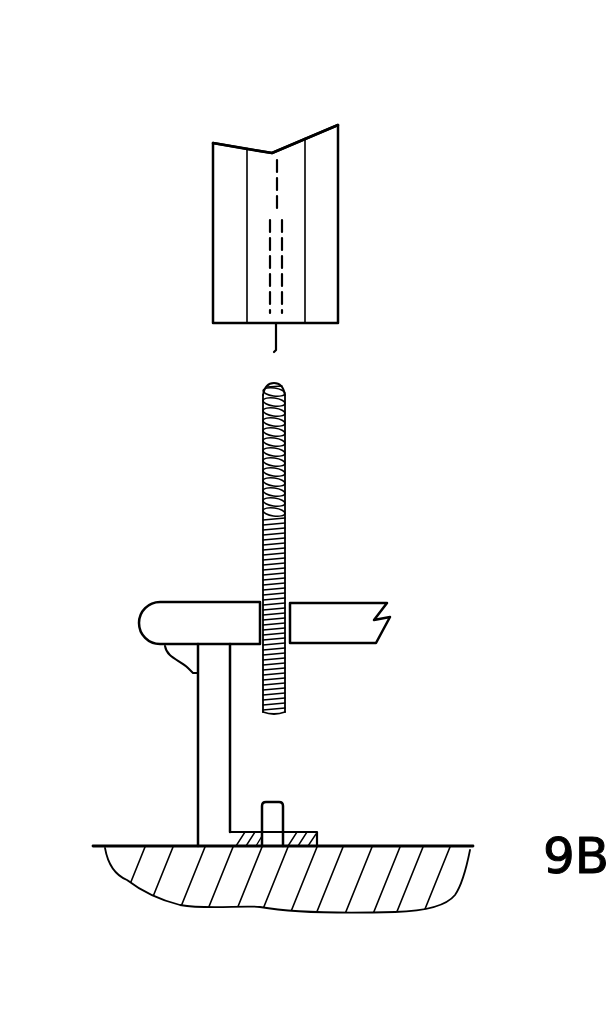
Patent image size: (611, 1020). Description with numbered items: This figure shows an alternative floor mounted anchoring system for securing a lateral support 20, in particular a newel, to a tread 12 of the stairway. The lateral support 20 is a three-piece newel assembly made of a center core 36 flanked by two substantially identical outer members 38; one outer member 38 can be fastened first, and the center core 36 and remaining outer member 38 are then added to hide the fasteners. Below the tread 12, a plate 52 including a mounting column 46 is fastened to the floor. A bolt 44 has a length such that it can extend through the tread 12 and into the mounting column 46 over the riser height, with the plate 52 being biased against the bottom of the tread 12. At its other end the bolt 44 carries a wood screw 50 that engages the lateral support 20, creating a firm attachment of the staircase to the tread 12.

The tread 12 is at (153, 626).
The lateral support 20 is at (332, 244).
The center core 36 is at (290, 157).
The outer member 38 is at (229, 162).
The bolt 44 is at (283, 558).
The mounting column 46 is at (287, 818).
The wood screw 50 is at (287, 413).
The plate 52 is at (310, 833).